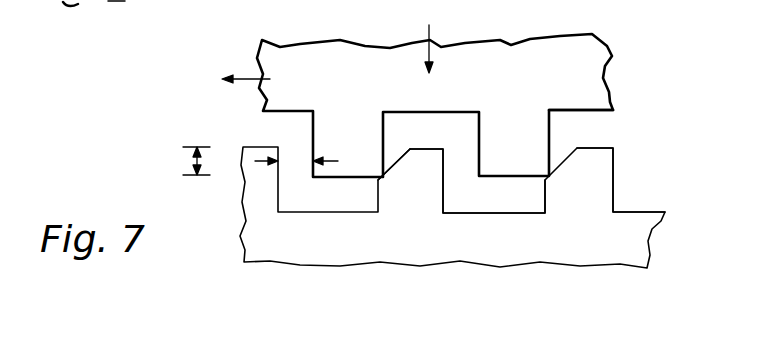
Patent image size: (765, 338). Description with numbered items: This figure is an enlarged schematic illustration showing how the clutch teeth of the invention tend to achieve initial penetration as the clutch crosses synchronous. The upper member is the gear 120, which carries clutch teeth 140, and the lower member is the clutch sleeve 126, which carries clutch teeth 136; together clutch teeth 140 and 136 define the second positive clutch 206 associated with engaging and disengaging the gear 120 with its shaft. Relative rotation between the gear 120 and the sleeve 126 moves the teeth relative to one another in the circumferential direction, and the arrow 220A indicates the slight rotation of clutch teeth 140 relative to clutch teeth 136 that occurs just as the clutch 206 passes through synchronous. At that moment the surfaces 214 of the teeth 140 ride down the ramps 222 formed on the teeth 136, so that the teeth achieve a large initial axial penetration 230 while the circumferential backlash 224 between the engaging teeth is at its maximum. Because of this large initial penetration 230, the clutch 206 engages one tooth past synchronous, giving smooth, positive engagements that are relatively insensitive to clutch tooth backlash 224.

The gear 120 is at (440, 52).
The second positive clutch 206 is at (640, 85).
The surfaces of teeth 140 214 is at (550, 138).
The ramps 222 is at (397, 160).
The backlash 224 is at (298, 160).
The clutch teeth 140 is at (518, 153).
The clutch teeth 136 is at (597, 202).
The sleeve 126 is at (445, 252).
The initial axial penetration 230 is at (193, 160).
The arrow of relative rotation 220A is at (236, 83).